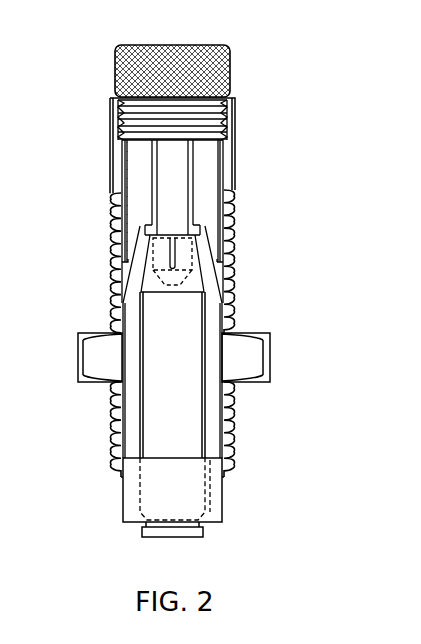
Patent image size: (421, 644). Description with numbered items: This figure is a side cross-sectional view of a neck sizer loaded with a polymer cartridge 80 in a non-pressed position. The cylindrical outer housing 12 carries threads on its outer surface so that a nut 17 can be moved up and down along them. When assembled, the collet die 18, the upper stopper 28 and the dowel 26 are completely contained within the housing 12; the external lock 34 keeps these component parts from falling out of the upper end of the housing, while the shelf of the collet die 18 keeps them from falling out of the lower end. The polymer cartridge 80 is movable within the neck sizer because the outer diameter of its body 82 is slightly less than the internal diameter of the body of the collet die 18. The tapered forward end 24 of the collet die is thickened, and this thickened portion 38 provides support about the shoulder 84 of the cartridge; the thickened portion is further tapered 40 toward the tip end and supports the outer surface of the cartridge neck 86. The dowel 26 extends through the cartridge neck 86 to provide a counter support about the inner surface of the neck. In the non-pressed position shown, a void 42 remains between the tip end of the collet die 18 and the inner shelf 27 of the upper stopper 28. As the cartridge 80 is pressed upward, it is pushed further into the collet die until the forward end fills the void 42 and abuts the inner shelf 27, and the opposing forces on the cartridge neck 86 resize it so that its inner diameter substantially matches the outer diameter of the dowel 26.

The outer housing 12 is at (115, 413).
The nut 17 is at (88, 360).
The collet die 18 is at (132, 308).
The tapered forward end 24 is at (136, 278).
The dowel 26 is at (163, 162).
The inner shelf 27 is at (140, 205).
The upper stopper 28 is at (205, 173).
The external lock 34 is at (230, 60).
The thickened portion 38 is at (120, 257).
The taper 40 is at (110, 230).
The void 42 is at (148, 226).
The polymer cartridge 80 is at (181, 538).
The body 82 is at (195, 397).
The shoulder 84 is at (195, 290).
The cartridge neck 86 is at (210, 260).